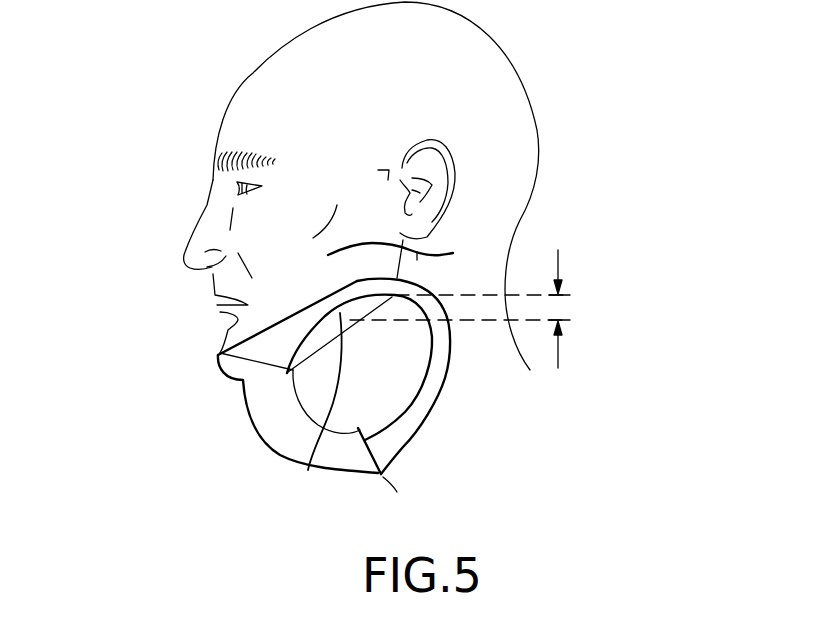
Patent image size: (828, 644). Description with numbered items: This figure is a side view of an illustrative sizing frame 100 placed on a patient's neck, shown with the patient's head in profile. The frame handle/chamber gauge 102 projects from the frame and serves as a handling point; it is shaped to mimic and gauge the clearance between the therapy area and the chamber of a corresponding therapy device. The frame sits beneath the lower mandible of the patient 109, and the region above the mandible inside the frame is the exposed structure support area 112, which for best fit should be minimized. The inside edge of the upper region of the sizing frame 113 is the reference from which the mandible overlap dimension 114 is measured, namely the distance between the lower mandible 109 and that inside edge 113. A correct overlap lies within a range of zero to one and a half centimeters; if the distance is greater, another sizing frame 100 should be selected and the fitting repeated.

The sizing frame 100 is at (165, 391).
The frame handle/chamber gauge 102 is at (267, 413).
The lower mandible of the patient 109 is at (378, 332).
The exposed structure support area 112 is at (308, 470).
The inside edge of the upper region of the sizing frame 113 is at (328, 255).
The mandible overlap dimension 114 is at (558, 250).